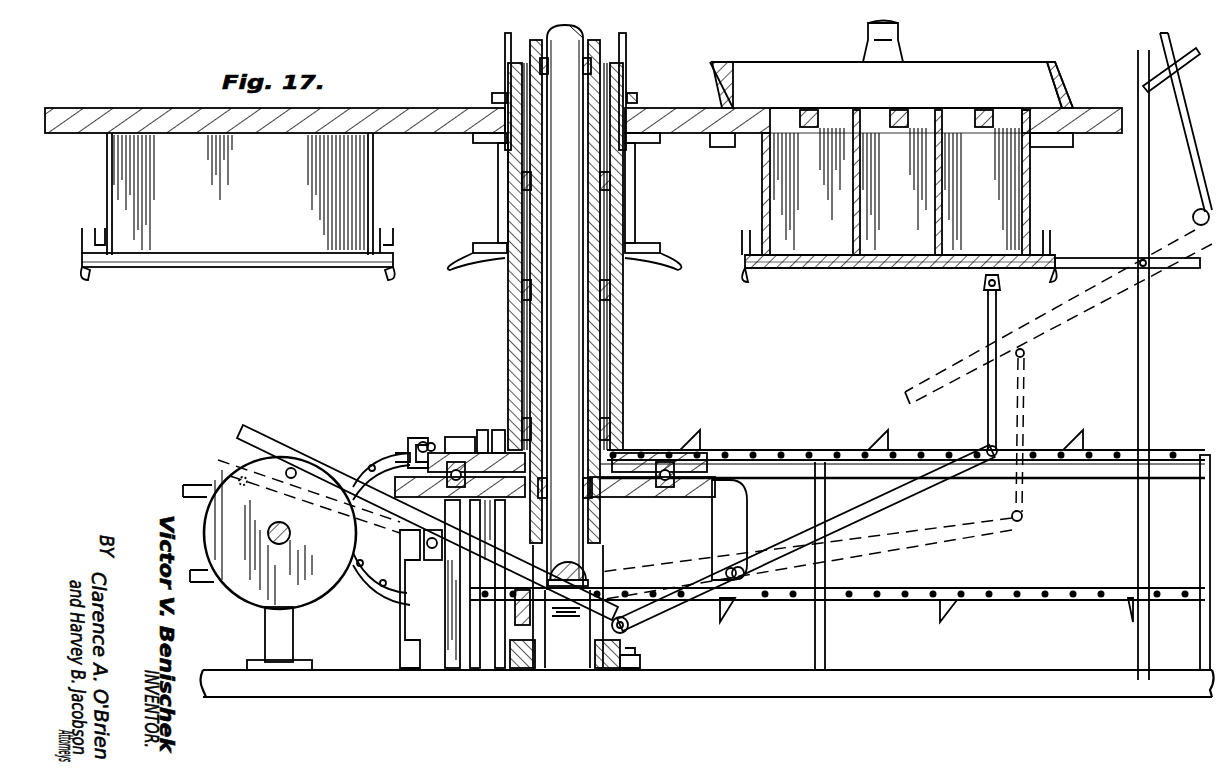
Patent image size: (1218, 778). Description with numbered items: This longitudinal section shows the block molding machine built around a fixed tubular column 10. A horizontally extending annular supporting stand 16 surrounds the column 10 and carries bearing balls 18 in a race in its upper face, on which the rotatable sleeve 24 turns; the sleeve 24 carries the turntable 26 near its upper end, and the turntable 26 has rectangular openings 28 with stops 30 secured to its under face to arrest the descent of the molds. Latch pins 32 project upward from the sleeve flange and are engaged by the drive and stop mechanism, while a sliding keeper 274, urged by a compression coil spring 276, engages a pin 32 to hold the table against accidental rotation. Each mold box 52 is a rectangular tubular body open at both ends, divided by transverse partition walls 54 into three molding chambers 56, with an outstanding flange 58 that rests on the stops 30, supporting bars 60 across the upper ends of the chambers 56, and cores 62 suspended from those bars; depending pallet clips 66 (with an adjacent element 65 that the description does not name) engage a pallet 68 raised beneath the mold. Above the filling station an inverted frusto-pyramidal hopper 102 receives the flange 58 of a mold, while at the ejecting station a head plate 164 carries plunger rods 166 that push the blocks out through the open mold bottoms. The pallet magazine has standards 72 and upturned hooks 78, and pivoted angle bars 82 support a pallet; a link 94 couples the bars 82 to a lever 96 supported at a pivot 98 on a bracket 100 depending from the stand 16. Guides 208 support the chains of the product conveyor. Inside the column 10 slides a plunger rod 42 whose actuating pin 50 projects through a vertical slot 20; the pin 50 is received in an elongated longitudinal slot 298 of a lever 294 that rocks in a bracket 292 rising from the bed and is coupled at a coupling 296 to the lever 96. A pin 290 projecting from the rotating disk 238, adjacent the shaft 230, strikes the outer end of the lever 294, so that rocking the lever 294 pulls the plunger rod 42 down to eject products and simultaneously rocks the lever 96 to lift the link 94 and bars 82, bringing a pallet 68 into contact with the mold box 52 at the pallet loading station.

The column 10 is at (606, 386).
The supporting stand 16 is at (652, 498).
The bearing balls 18 is at (452, 462).
The slot 20 is at (600, 583).
The rotatable sleeve 24 is at (623, 413).
The turntable 26 is at (388, 110).
The rectangular openings 28 is at (1075, 134).
The stops 30 is at (724, 147).
The latch pins 32 is at (462, 437).
The plunger rod 42 is at (578, 365).
The actuating pin 50 is at (572, 629).
The mold box 52 is at (374, 191).
The partition walls 54 is at (862, 189).
The molding chambers 56 is at (869, 106).
The outstanding flange 58 is at (1047, 105).
The supporting bars 60 is at (812, 112).
The cores 62 is at (778, 270).
The clip 65 is at (380, 228).
The pallet clips 66 is at (395, 255).
The pallets 68 is at (250, 264).
The standards 72 is at (1150, 391).
The upturned hooks 78 is at (1193, 215).
The angle bars 82 is at (1046, 326).
The link 94 is at (987, 319).
The lever 96 is at (886, 507).
The pivot 98 is at (736, 564).
The bracket 100 is at (738, 534).
The hopper 102 is at (733, 93).
The head plate 164 is at (639, 101).
The plunger rods 166 is at (627, 61).
The guides 208 is at (1060, 473).
The shaft 230 is at (290, 531).
The disk 238 is at (232, 493).
The keeper 274 is at (499, 430).
The compression coil spring 276 is at (423, 442).
The pin 290 is at (294, 468).
The bracket 292 is at (405, 633).
The lever 294 is at (264, 432).
The coupling 296 is at (628, 630).
The elongated longitudinal slot 298 is at (707, 683).